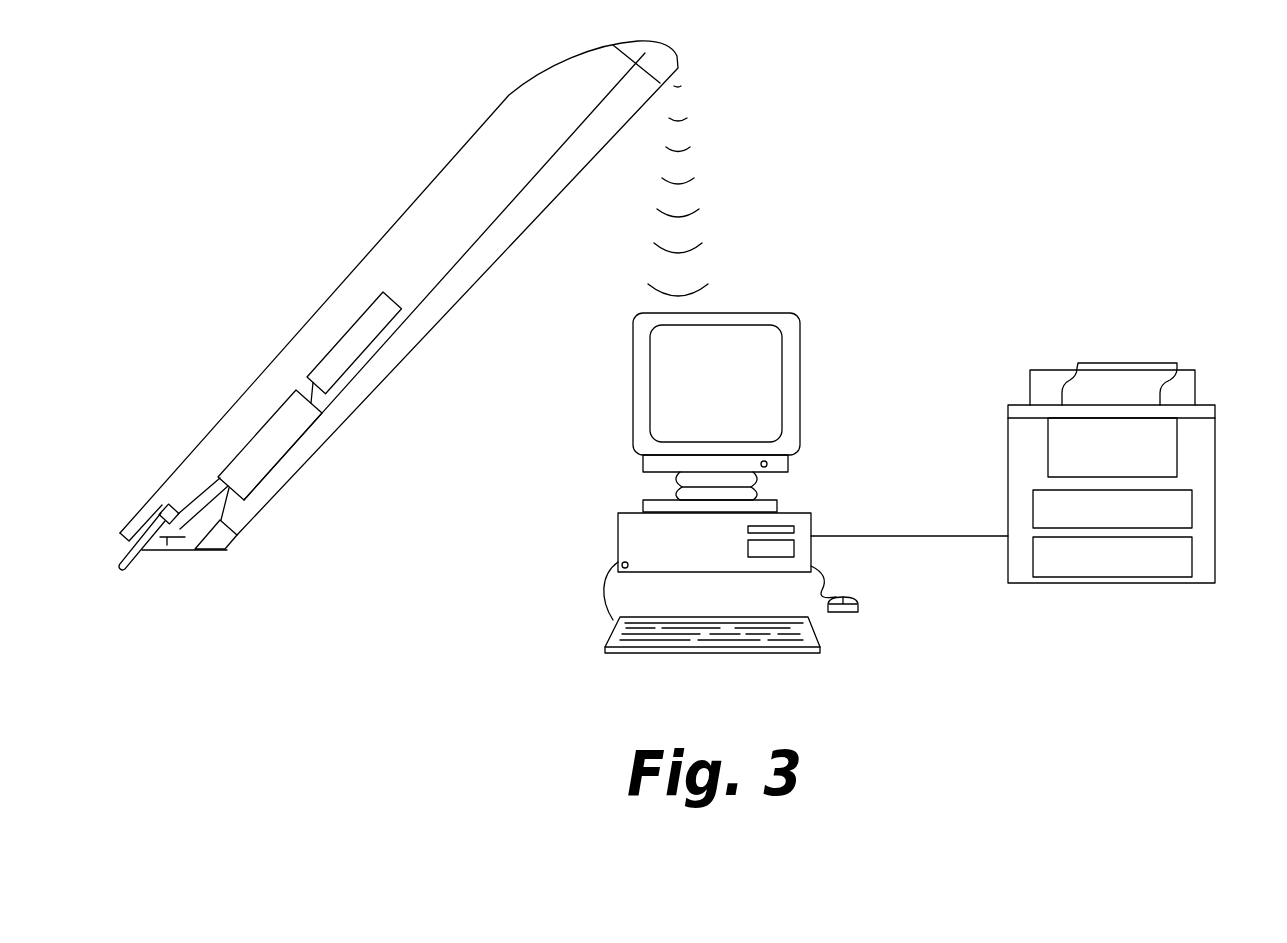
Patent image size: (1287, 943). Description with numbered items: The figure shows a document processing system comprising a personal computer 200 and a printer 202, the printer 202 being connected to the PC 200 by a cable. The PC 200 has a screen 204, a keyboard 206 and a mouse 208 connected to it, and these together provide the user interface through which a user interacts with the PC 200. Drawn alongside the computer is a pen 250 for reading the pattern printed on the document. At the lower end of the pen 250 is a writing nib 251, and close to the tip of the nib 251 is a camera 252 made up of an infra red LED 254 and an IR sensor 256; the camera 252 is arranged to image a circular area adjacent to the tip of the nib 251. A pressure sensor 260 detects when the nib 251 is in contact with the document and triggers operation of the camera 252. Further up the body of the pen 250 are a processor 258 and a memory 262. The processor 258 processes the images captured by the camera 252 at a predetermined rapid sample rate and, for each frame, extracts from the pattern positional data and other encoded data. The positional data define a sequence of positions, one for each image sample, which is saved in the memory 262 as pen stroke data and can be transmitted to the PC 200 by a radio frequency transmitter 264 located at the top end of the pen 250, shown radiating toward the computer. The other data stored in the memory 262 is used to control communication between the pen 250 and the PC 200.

The personal computer 200 is at (617, 520).
The printer 202 is at (1215, 495).
The screen 204 is at (775, 380).
The keyboard 206 is at (727, 657).
The mouse 208 is at (853, 613).
The pen 250 is at (397, 217).
The writing nib 251 is at (128, 567).
The camera 252 is at (233, 545).
The infra red LED 254 is at (218, 551).
The IR sensor 256 is at (167, 545).
The processor 258 is at (273, 462).
The pressure sensor 260 is at (162, 495).
The memory 262 is at (338, 340).
The transmitter 264 is at (663, 63).